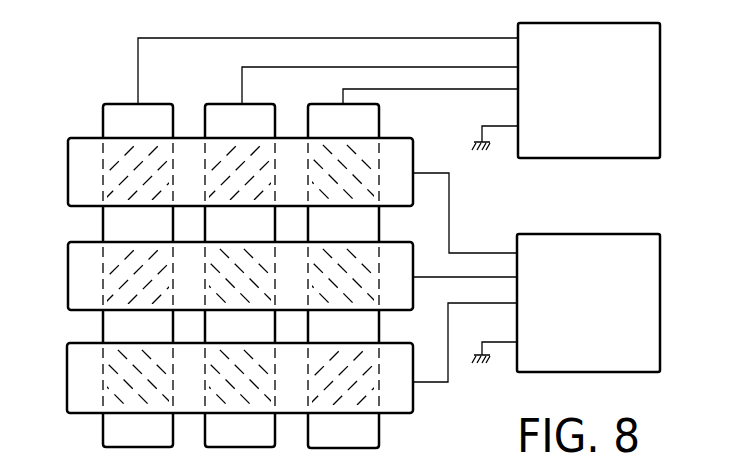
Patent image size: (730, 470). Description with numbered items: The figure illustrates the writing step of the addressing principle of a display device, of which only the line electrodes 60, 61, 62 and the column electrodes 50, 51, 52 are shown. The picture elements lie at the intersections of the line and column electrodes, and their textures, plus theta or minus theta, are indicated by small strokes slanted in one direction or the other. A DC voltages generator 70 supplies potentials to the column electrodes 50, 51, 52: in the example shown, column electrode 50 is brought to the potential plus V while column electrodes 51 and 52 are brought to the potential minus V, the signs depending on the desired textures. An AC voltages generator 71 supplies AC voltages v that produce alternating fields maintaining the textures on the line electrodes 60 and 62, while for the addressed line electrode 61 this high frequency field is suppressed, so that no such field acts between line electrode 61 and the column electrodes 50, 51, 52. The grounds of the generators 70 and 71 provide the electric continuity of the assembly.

The column electrode 50 is at (289, 242).
The column electrode 51 is at (228, 89).
The column electrode 52 is at (403, 127).
The line electrode 60 is at (68, 173).
The line electrode 61 is at (68, 278).
The line electrode 62 is at (68, 385).
The DC voltages generator 70 is at (660, 68).
The AC voltages generator 71 is at (660, 278).